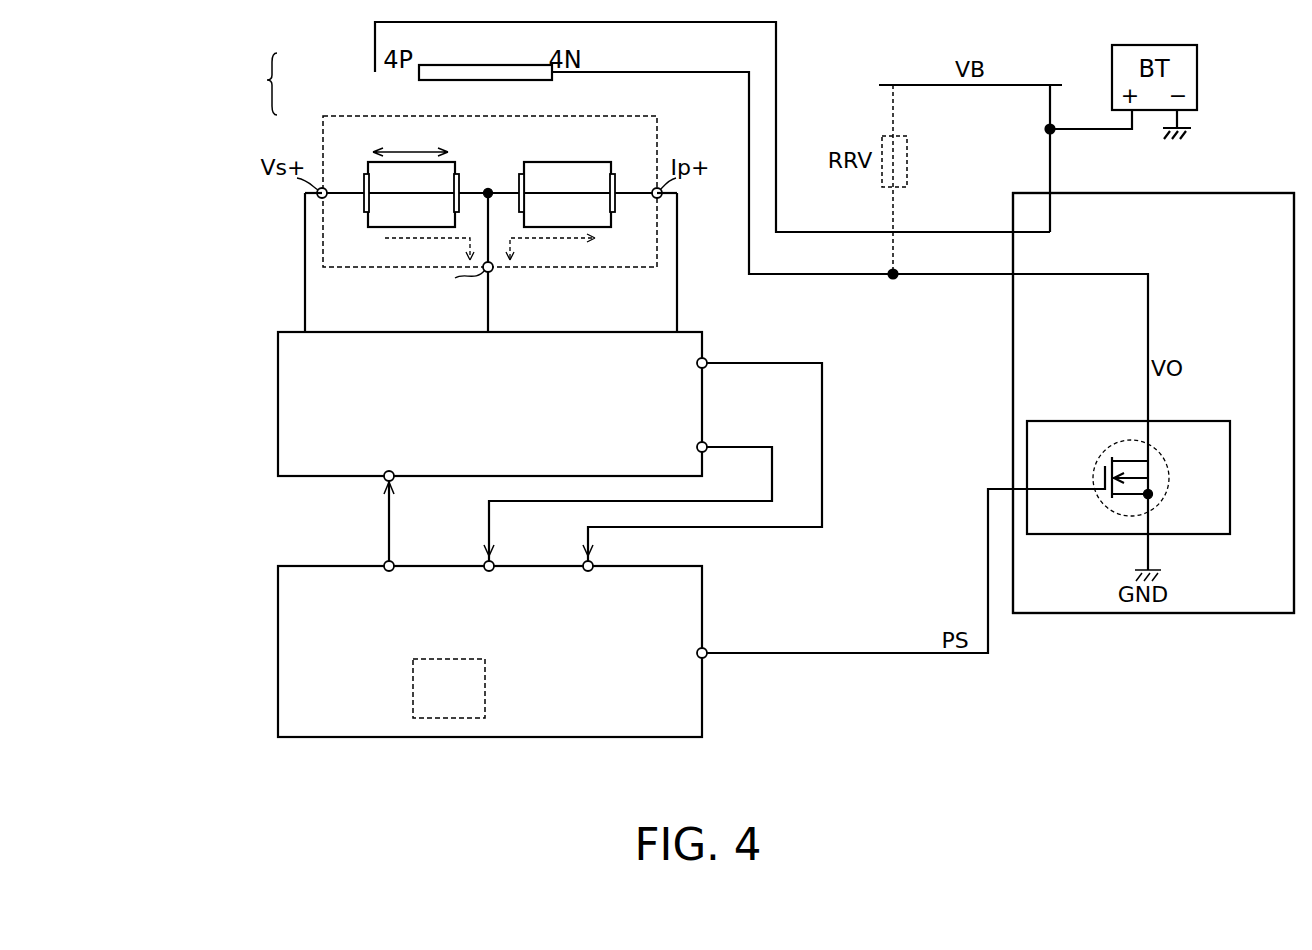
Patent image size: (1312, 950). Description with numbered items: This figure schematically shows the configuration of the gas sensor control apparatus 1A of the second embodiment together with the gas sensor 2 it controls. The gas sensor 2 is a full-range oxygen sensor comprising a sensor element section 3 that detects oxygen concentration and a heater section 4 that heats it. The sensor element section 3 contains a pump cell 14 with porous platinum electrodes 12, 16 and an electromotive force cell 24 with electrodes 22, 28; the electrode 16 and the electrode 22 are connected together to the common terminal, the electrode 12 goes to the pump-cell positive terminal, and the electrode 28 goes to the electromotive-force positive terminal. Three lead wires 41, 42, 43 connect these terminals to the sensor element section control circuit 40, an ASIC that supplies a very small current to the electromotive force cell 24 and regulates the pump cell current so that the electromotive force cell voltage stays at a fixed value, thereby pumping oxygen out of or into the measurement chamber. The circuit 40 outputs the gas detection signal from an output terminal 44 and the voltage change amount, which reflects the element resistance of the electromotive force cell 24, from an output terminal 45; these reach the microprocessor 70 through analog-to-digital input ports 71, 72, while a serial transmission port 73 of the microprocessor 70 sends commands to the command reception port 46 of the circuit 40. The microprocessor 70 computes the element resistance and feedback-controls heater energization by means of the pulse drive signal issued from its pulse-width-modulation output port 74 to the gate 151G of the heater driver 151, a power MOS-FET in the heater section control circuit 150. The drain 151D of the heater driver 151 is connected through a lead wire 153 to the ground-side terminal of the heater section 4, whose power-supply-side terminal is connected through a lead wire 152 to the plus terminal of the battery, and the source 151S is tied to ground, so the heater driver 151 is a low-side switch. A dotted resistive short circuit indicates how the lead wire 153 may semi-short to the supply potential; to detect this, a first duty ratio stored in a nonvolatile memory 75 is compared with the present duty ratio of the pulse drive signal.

The gas sensor control apparatus 1A is at (1096, 681).
The gas sensor 2 is at (455, 158).
The sensor element section 3 is at (357, 114).
The heater section 4 is at (420, 79).
The electrode 12 is at (613, 188).
The pump cell 14 is at (612, 214).
The electrode 16 is at (518, 188).
The electrode 22 is at (486, 190).
The electromotive force cell 24 is at (365, 184).
The electrode 28 is at (365, 204).
The sensor element section control circuit 40 is at (278, 402).
The lead wire 41 is at (303, 273).
The lead wire 42 is at (676, 259).
The lead wire 43 is at (493, 306).
The output terminal 44 is at (706, 360).
The output terminal 45 is at (706, 450).
The command reception port 46 is at (384, 482).
The microprocessor 70 is at (278, 655).
The A/D input port 71 is at (584, 560).
The A/D input port 72 is at (485, 560).
The serial transmission port 73 is at (385, 562).
The PWM output port 74 is at (706, 650).
The nonvolatile memory 75 is at (412, 692).
The heater section control circuit 150 is at (1218, 613).
The heater driver 151 is at (1128, 502).
The drain 151D is at (1163, 446).
The gate 151G is at (1066, 478).
The source 151S is at (1163, 509).
The lead wire 152 is at (947, 231).
The lead wire 153 is at (943, 277).